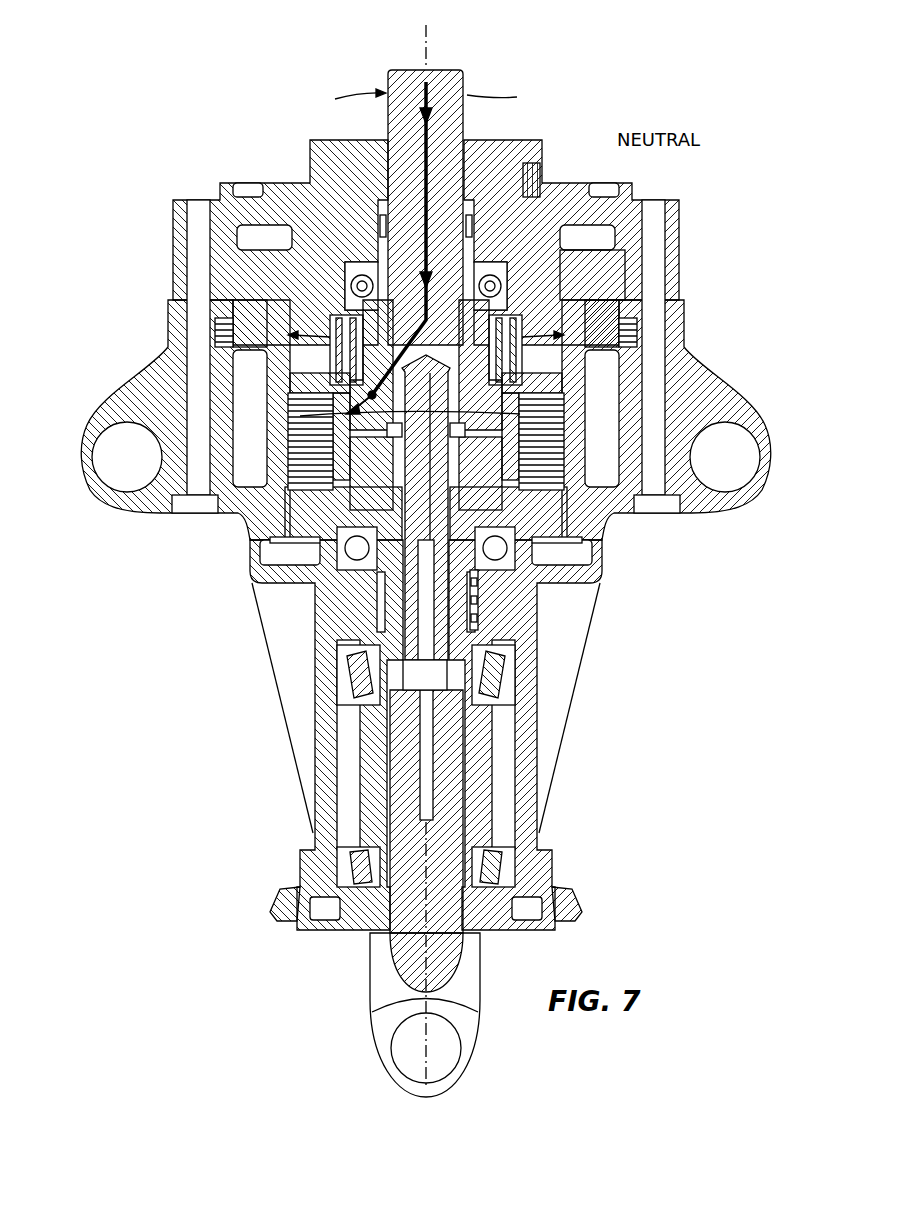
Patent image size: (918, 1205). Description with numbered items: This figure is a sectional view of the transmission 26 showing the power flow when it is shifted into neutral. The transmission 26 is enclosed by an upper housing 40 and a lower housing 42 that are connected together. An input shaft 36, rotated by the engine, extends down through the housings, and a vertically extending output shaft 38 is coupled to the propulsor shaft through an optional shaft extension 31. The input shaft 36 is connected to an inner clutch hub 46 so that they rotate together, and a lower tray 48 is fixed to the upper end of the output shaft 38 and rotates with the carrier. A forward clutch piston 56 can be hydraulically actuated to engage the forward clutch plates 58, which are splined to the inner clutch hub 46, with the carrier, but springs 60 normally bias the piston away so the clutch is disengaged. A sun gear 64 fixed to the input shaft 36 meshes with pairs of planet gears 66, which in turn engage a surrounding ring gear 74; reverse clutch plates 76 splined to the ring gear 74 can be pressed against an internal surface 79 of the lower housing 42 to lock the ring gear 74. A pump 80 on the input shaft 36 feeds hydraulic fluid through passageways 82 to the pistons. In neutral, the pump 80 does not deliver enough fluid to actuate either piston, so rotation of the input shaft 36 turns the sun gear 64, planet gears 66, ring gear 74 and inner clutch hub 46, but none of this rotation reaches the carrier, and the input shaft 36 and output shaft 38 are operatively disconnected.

The transmission 26 is at (667, 95).
The shaft extension 31 is at (405, 797).
The input shaft 36 is at (465, 80).
The output shaft 38 is at (400, 657).
The upper housing 40 is at (220, 193).
The lower housing 42 is at (263, 583).
The inner clutch hub 46 is at (270, 547).
The lower tray 48 is at (280, 507).
The forward clutch piston 56 is at (560, 527).
The forward clutch plates 58 is at (565, 450).
The springs 60 is at (560, 487).
The sun gear 64 is at (590, 320).
The pairs of planet gears 66 is at (623, 362).
The ring gear 74 is at (600, 297).
The reverse clutch plates 76 is at (233, 340).
The internal surface 79 is at (240, 350).
The pump 80 is at (490, 178).
The hydraulic fluid passageways 82 is at (256, 240).